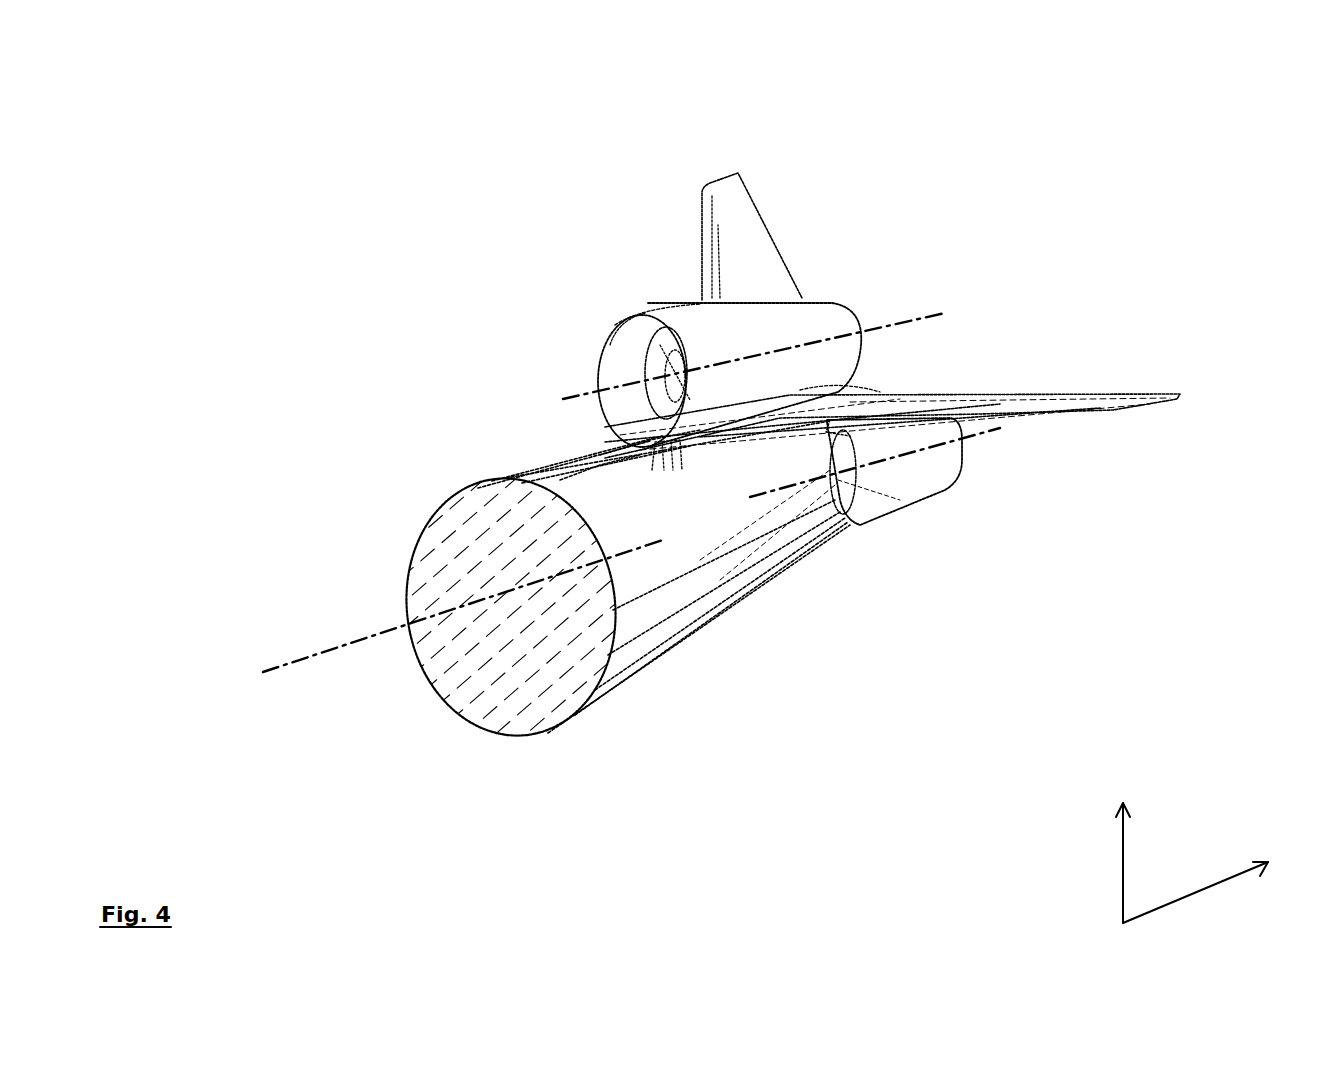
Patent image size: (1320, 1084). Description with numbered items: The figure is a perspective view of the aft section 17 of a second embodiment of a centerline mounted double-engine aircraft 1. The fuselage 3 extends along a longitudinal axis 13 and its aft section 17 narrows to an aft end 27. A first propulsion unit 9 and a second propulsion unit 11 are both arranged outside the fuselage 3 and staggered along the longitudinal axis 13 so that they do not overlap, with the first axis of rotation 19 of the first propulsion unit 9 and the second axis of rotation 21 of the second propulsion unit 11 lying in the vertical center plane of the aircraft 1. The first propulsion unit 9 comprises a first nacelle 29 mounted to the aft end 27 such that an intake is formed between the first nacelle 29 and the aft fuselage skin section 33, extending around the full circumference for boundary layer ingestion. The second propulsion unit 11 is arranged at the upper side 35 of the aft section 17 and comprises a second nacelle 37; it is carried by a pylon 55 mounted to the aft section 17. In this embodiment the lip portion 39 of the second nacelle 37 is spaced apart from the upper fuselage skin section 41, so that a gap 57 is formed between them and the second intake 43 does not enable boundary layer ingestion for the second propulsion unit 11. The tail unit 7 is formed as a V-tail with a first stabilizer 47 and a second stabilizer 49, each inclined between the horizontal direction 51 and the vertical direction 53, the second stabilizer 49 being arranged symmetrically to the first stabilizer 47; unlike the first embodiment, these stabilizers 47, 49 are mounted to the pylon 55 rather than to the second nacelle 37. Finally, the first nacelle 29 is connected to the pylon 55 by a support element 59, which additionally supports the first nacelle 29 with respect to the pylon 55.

The aircraft 1 is at (350, 222).
The fuselage 3 is at (428, 530).
The tail unit 7 is at (757, 184).
The first propulsion unit 9 is at (944, 596).
The second propulsion unit 11 is at (685, 318).
The longitudinal axis 13 is at (360, 640).
The aft section 17 is at (738, 540).
The first axis of rotation 19 is at (970, 437).
The second axis of rotation 21 is at (907, 322).
The aft end 27 is at (836, 467).
The first nacelle 29 is at (930, 463).
The aft fuselage skin section 33 is at (836, 487).
The upper side 35 is at (649, 258).
The second nacelle 37 is at (667, 269).
The lip portion 39 is at (635, 315).
The upper fuselage skin section 41 is at (615, 488).
The second intake 43 is at (630, 355).
The first stabilizer 47 is at (940, 369).
The second stabilizer 49 is at (735, 200).
The horizontal direction 51 is at (1213, 887).
The vertical direction 53 is at (1122, 846).
The pylon 55 is at (693, 462).
The gap 57 is at (640, 463).
The support element 59 is at (838, 394).